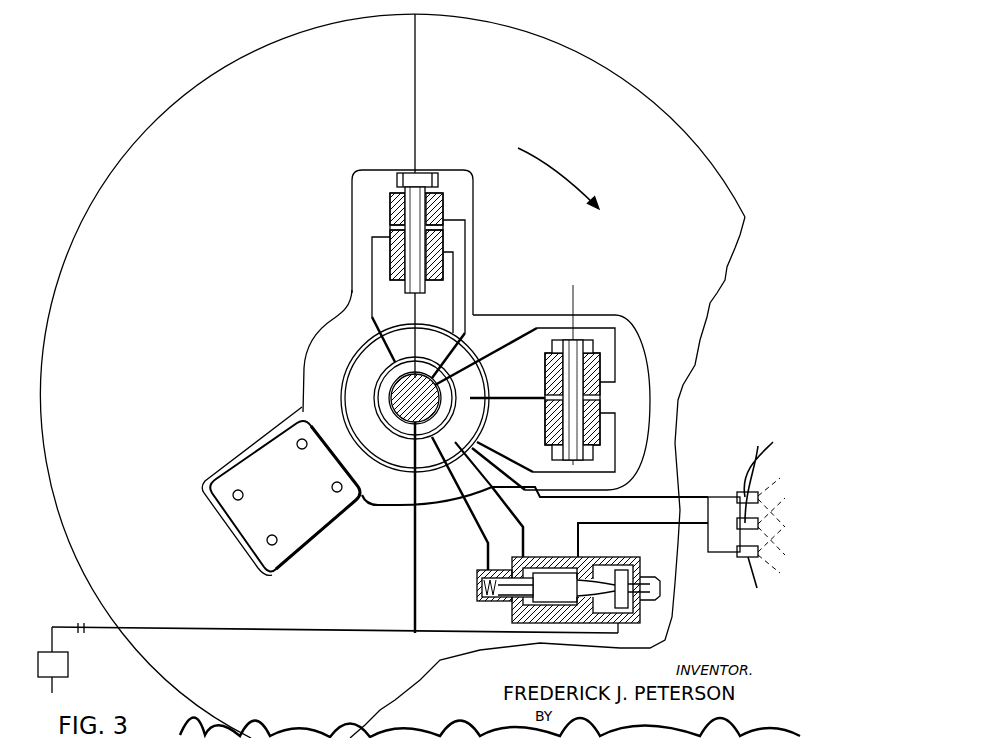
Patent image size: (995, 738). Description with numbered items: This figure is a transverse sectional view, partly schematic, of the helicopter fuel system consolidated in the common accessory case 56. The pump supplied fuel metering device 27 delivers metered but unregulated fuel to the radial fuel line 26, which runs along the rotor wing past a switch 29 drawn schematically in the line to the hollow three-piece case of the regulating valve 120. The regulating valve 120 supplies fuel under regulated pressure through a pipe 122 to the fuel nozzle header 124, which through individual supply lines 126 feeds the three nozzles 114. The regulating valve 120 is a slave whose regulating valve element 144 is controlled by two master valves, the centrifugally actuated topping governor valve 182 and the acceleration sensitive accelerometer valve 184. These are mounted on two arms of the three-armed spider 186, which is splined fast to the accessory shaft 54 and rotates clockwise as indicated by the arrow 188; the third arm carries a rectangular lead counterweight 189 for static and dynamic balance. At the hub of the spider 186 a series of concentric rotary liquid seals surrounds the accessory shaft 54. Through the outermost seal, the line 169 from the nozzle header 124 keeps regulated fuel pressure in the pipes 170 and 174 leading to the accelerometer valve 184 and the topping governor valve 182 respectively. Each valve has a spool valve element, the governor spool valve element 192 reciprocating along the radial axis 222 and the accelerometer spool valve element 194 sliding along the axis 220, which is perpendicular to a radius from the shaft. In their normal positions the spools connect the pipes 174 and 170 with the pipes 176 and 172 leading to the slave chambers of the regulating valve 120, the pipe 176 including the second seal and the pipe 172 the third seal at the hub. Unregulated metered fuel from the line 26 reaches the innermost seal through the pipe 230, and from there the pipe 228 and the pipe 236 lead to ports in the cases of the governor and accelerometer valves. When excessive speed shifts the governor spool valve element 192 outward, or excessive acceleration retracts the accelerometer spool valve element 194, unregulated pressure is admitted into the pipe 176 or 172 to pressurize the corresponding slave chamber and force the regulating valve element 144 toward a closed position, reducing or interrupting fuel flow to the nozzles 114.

The radial fuel line 26 is at (264, 630).
The fuel metering device 27 is at (68, 662).
The switch 29 is at (70, 629).
The accessory shaft 54 is at (394, 391).
The accessory case 56 is at (640, 91).
The nozzles 114 is at (762, 520).
The regulating valve 120 is at (479, 592).
The pipe 122 is at (620, 526).
The fuel nozzle header 124 is at (713, 507).
The supply lines 126 is at (716, 557).
The regulating valve element 144 is at (551, 576).
The line 169 is at (627, 480).
The regulated metered fuel pipe 170 is at (487, 443).
The pipe 172 is at (531, 379).
The regulated pressure fuel passage 174 is at (455, 269).
The pipe 176 is at (372, 277).
The topping governor valve 182 is at (390, 218).
The accelerometer valve 184 is at (598, 378).
The three-armed spider 186 is at (392, 511).
The arrow 188 is at (575, 176).
The counterweight 189 is at (253, 466).
The governor spool valve element 192 is at (390, 202).
The accelerometer spool valve element 194 is at (598, 361).
The accelerometer valve axis 220 is at (575, 310).
The governor valve axis 222 is at (428, 74).
The pipe 228 is at (467, 233).
The pipe 230 is at (413, 592).
The pipe 236 is at (506, 330).